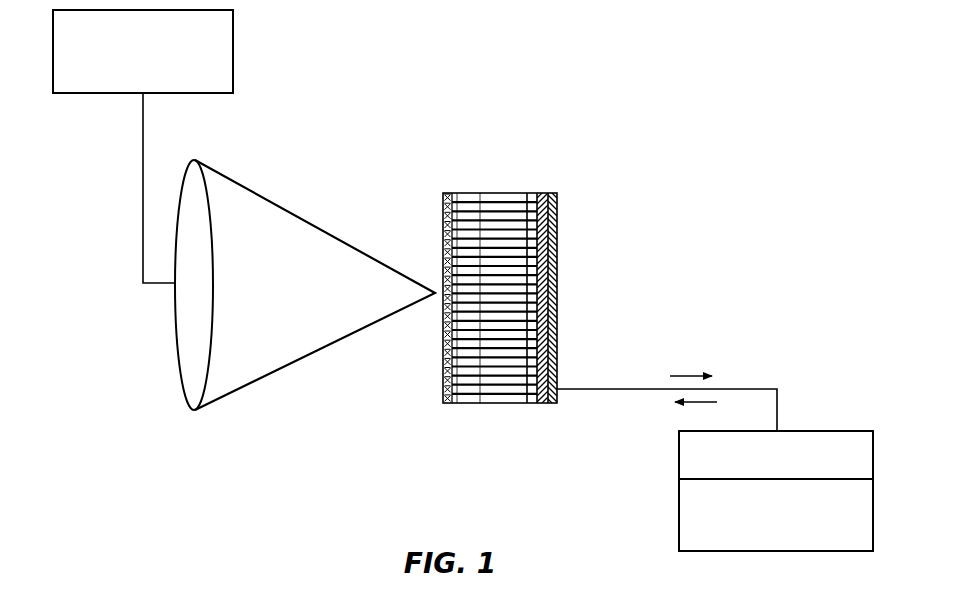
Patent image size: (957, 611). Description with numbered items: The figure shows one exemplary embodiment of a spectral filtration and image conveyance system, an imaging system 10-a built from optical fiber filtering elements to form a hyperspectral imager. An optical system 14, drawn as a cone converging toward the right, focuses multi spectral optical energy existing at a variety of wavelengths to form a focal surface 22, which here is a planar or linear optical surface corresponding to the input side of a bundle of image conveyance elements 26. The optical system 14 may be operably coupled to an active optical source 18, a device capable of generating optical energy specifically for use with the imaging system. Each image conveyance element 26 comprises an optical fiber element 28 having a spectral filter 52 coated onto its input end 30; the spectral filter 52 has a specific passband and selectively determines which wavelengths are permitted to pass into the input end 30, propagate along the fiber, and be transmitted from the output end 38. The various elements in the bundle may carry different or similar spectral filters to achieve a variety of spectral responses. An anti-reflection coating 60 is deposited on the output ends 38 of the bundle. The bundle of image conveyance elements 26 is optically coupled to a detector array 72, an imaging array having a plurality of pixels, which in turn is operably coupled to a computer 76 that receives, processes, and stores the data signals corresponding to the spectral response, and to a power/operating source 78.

The imaging system 10-a is at (670, 159).
The optical system 14 is at (310, 220).
The active optical source 18 is at (218, 68).
The focal surface 22 is at (437, 253).
The image conveyance elements 26 is at (493, 190).
The optical fiber element 28 is at (480, 197).
The input end 30 is at (457, 197).
The output end 38 is at (518, 197).
The spectral filter 52 is at (440, 353).
The anti-reflection coating 60 is at (530, 405).
The detector array 72 is at (558, 233).
The computer 76 is at (681, 465).
The power/operating source 78 is at (692, 534).